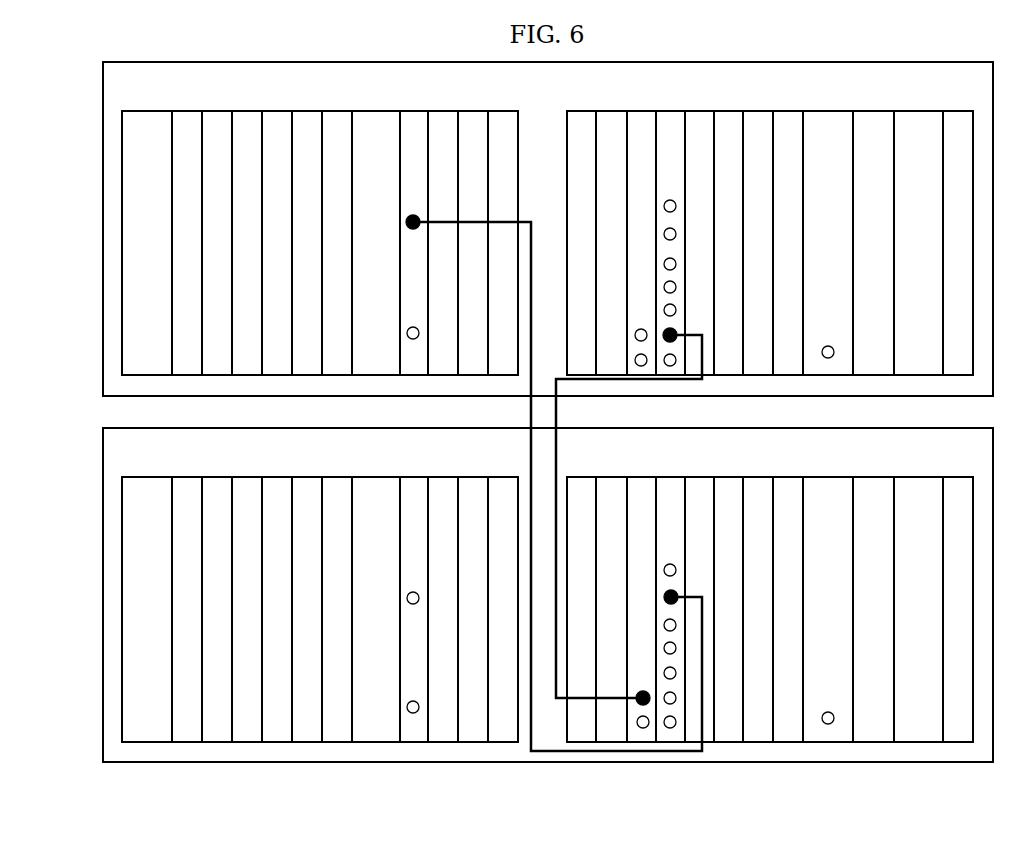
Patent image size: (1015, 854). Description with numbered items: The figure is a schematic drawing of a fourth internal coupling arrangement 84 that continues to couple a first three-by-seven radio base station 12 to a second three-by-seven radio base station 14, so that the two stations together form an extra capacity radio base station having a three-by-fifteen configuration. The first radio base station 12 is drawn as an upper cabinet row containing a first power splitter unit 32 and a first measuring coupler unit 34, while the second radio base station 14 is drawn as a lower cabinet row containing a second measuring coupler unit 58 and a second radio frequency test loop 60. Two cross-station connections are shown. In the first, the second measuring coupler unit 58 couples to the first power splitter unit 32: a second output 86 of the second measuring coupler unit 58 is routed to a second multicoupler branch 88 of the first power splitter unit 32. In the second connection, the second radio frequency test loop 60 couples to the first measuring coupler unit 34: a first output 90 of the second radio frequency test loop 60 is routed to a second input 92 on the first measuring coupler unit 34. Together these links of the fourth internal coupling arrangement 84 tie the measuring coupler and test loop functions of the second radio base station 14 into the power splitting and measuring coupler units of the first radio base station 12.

The first radio base station 12 is at (103, 84).
The second radio base station 14 is at (103, 458).
The fourth internal coupling arrangement 84 is at (438, 86).
The first power splitter unit 32 is at (410, 115).
The first measuring coupler unit 34 is at (670, 112).
The second multicoupler branch 88 is at (406, 222).
The second input 92 is at (676, 333).
The second radio frequency test loop 60 is at (642, 480).
The second measuring coupler unit 58 is at (672, 478).
The second output 86 is at (676, 594).
The first output 90 is at (639, 694).